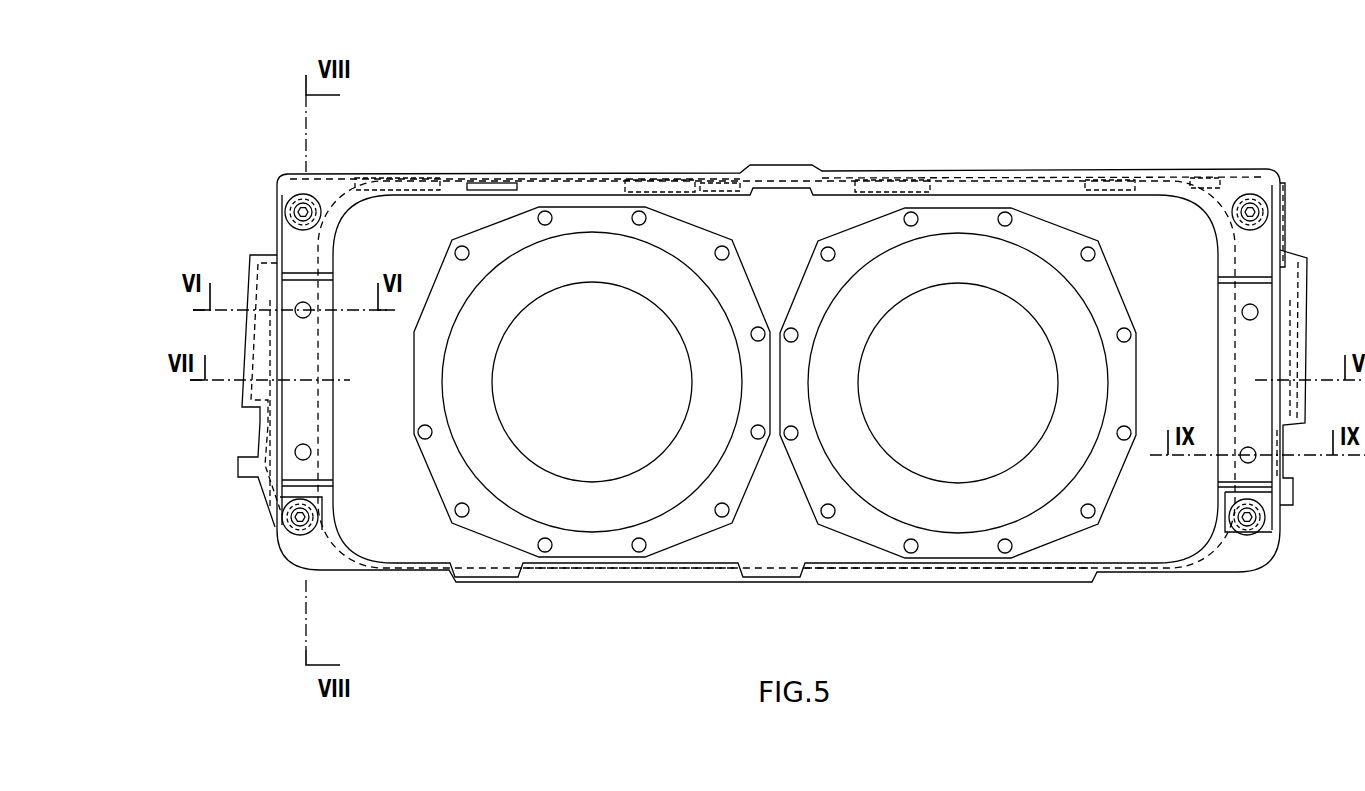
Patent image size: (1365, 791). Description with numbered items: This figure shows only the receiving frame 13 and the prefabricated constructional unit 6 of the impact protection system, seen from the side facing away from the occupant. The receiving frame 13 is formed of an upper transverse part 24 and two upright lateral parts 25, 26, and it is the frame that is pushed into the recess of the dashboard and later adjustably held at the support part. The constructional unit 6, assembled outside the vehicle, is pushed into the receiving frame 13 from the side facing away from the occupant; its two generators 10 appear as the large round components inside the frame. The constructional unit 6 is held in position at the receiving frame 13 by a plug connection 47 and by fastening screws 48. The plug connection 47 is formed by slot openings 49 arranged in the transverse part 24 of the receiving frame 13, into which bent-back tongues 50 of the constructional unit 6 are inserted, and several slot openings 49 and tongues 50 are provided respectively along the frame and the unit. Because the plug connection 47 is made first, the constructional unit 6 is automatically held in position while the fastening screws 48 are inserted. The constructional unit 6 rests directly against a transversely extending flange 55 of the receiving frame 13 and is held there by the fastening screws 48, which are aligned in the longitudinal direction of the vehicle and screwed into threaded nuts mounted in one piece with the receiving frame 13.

The constructional unit 6 is at (915, 583).
The generators 10 is at (775, 382).
The receiving frame 13 is at (1188, 170).
The upper transverse part 24 is at (858, 183).
The upright lateral part 25 is at (1283, 302).
The upright lateral part 26 is at (285, 350).
The plug connection 47 is at (395, 186).
The fastening screws 48 is at (301, 203).
The slot opening 49 is at (618, 183).
The bent-back tongue 50 is at (687, 190).
The transversely extending flange 55 is at (1263, 345).